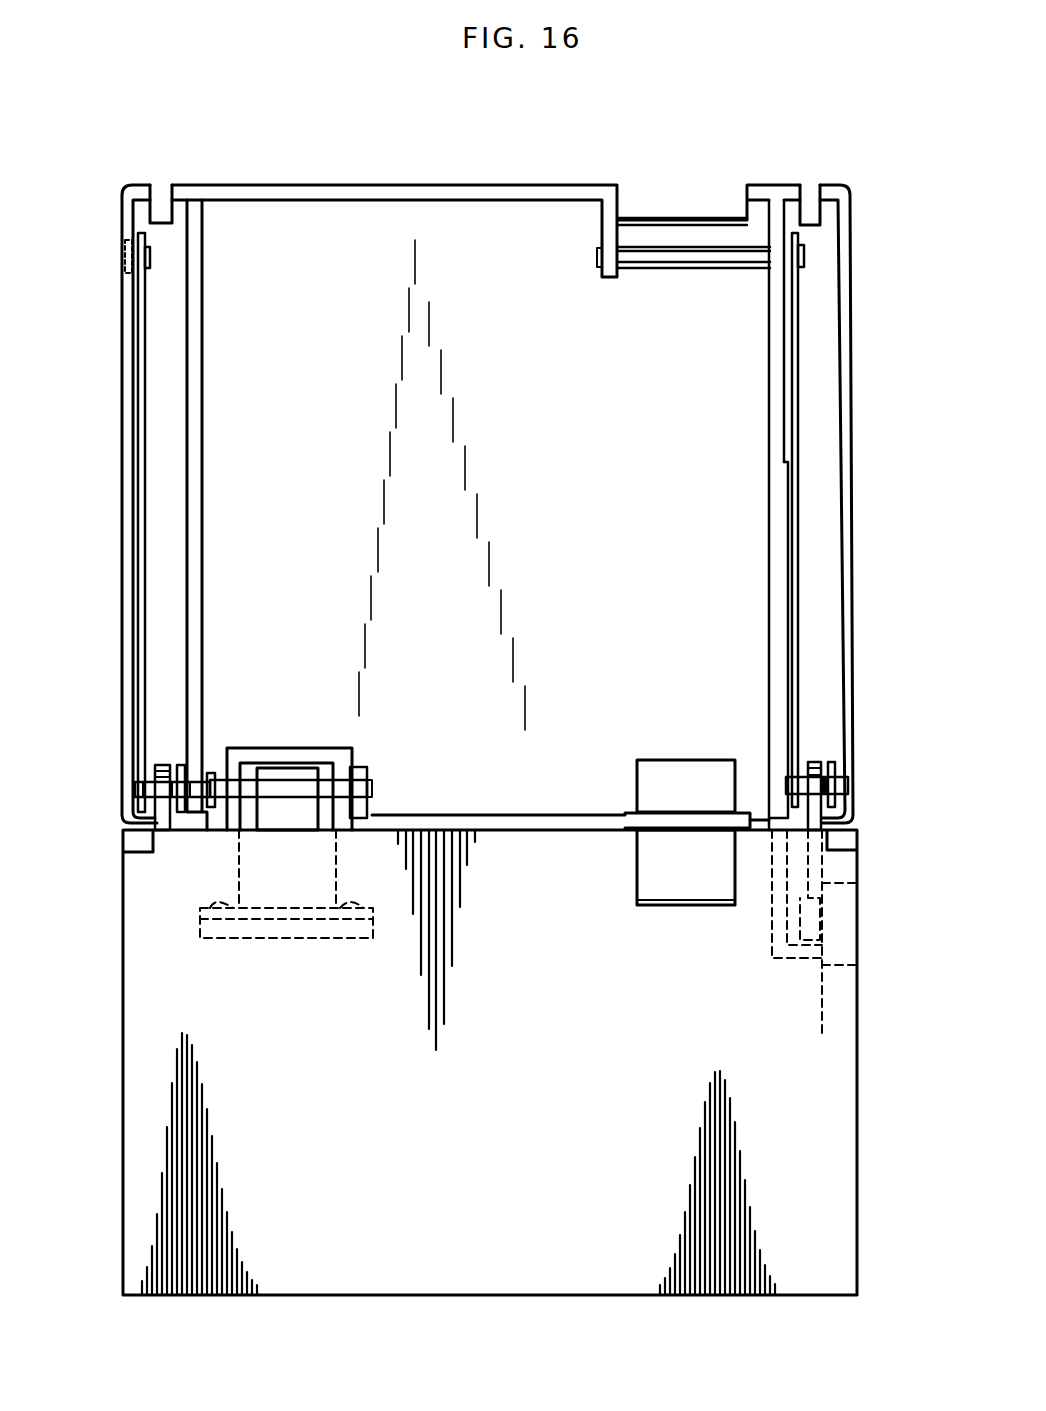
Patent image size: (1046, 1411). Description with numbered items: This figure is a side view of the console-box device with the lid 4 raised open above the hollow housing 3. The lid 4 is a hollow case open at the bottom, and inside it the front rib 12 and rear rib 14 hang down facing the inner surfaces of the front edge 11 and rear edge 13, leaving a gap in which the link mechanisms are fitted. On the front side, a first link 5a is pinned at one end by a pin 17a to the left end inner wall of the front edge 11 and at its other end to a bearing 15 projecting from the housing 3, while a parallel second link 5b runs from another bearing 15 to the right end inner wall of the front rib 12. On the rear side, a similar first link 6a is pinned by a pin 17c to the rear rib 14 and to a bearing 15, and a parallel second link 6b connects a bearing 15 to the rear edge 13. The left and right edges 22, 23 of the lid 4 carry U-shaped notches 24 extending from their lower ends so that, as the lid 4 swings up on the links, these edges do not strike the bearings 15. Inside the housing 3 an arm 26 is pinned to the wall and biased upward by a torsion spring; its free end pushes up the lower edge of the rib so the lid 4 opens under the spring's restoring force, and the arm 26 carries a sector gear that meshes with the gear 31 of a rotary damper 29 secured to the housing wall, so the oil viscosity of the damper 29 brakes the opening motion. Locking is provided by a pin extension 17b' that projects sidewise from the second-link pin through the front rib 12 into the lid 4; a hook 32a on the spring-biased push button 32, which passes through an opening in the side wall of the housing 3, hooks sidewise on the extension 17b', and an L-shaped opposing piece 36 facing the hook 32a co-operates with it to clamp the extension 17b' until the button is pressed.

The housing 3 is at (135, 1050).
The lid 4 is at (297, 230).
The first link 5a is at (138, 365).
The second link 5b is at (185, 765).
The first link 6a is at (798, 490).
The second link 6b is at (835, 770).
The front edge 11 is at (125, 438).
The front rib 12 is at (203, 440).
The rear edge 13 is at (850, 405).
The rear rib 14 is at (769, 395).
The bearing 15 is at (160, 765).
The pin 17a is at (133, 255).
The pin extension 17b' is at (253, 762).
The pin 17c is at (803, 256).
The left edge 22 is at (565, 185).
The right edge 23 is at (530, 815).
The U-shaped notch 24 is at (162, 195).
The arm 26 is at (775, 533).
The rotary damper 29 is at (845, 935).
The gear 31 is at (810, 945).
The push button 32 is at (640, 860).
The hook 32a is at (300, 785).
The L-shaped opposing piece 36 is at (660, 775).